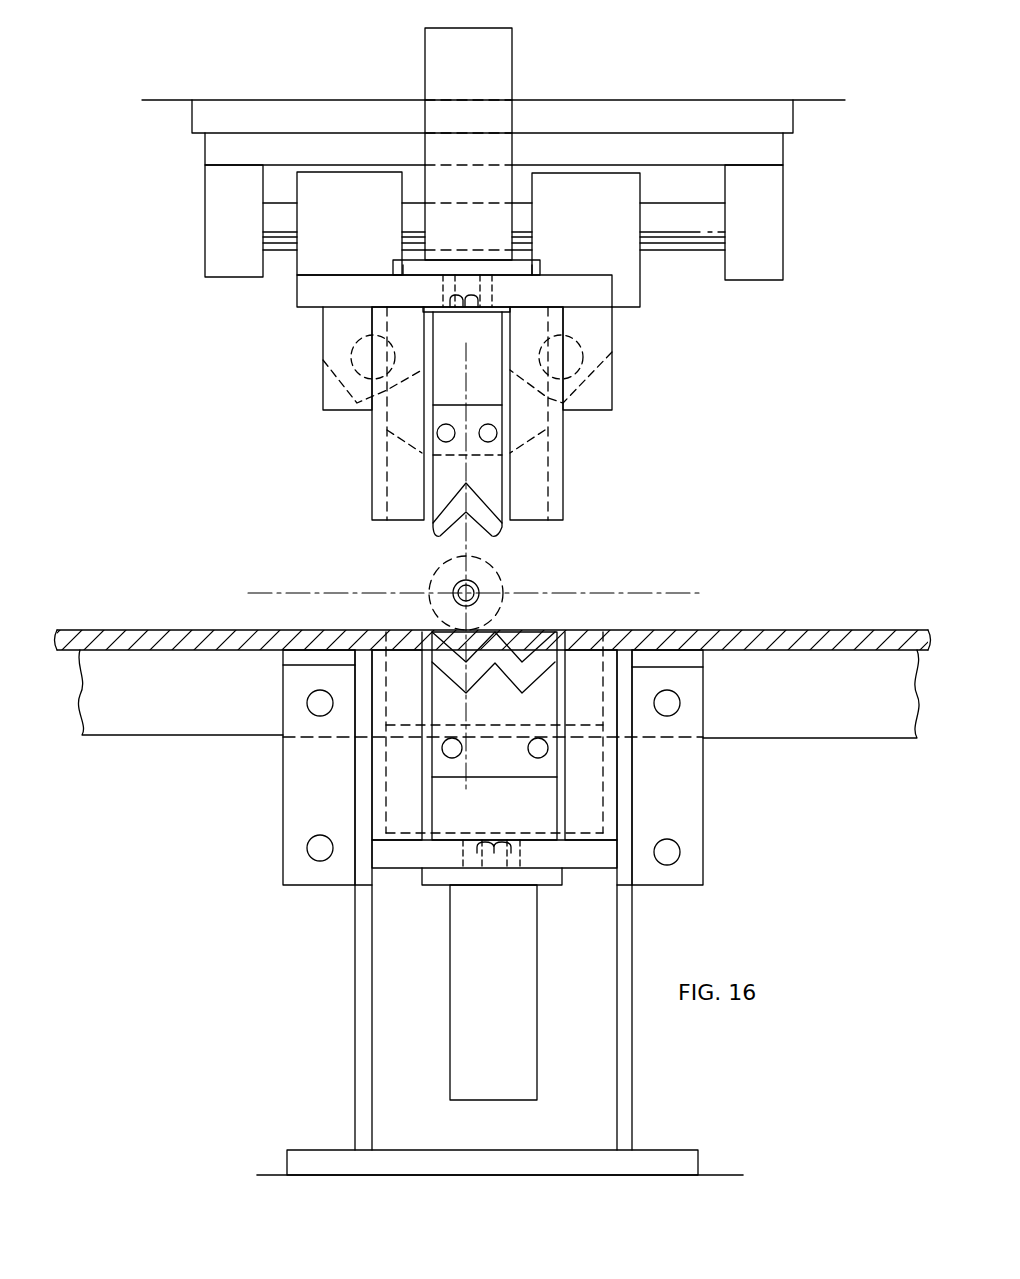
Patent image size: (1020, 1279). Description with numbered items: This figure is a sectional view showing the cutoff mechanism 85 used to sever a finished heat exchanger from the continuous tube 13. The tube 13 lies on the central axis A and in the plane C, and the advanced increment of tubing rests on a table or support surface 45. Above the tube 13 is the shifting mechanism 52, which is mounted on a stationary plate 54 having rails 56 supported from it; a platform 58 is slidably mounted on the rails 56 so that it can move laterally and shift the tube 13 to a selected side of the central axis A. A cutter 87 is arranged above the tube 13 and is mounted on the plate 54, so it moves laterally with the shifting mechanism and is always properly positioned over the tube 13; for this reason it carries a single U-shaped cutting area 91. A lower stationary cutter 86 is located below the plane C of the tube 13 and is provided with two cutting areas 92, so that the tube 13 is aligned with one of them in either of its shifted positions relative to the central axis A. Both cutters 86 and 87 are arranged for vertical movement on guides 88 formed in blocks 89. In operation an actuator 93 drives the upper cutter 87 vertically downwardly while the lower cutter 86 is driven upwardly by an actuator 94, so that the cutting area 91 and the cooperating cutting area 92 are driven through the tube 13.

The tube 13 is at (454, 590).
The table or support surface 45 is at (185, 630).
The shifting mechanism 52 is at (373, 84).
The stationary plate 54 is at (650, 101).
The rails 56 is at (690, 253).
The platform 58 is at (343, 296).
The cutoff mechanism 85 is at (423, 617).
The cutter 86 is at (487, 721).
The cutter 87 is at (440, 486).
The guides 88 is at (495, 617).
The blocks 89 is at (545, 462).
The U-shaped cutting area 91 is at (442, 544).
The cutting areas 92 is at (474, 650).
The actuator 93 is at (503, 77).
The actuator 94 is at (460, 1032).
The central axis A is at (467, 545).
The plane of tube C is at (658, 593).